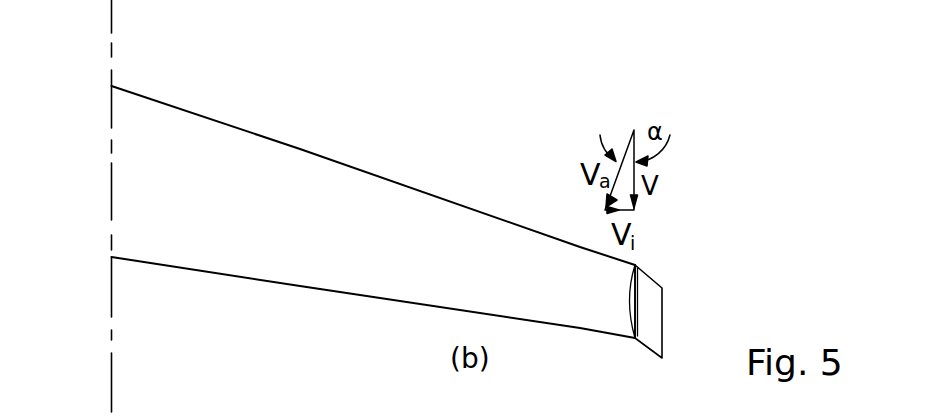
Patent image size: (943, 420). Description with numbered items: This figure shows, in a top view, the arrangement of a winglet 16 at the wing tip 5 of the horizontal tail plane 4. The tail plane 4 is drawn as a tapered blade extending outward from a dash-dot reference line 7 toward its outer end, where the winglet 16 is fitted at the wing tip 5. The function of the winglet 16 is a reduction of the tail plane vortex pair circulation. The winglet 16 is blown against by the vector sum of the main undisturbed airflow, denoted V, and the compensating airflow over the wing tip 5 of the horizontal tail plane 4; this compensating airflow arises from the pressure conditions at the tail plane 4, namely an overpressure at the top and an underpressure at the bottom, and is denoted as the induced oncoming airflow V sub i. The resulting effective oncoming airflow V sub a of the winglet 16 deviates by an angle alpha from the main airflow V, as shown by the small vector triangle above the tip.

The axis of rotation 7 is at (110, 52).
The wing tip 5 is at (183, 138).
The horizontal tail plane 4 is at (237, 129).
The winglet 16 is at (656, 316).